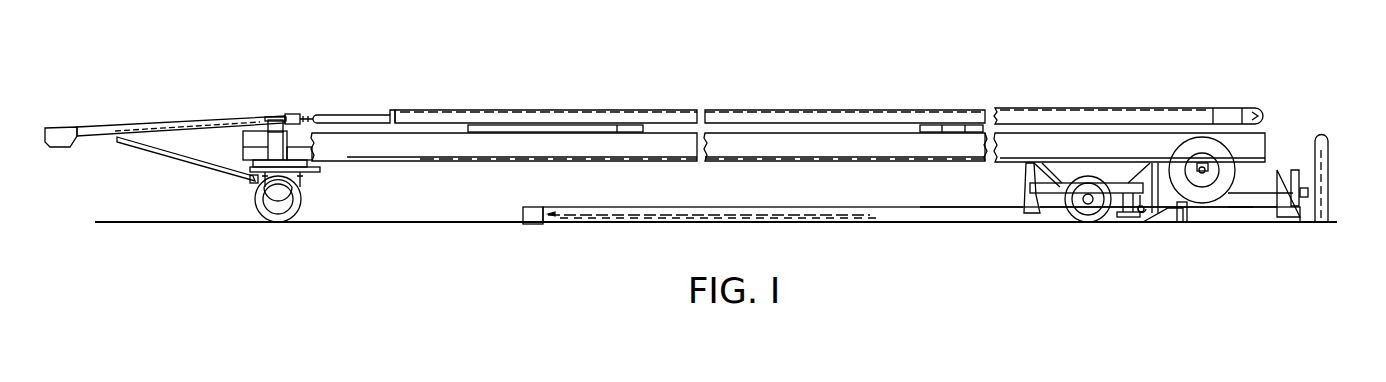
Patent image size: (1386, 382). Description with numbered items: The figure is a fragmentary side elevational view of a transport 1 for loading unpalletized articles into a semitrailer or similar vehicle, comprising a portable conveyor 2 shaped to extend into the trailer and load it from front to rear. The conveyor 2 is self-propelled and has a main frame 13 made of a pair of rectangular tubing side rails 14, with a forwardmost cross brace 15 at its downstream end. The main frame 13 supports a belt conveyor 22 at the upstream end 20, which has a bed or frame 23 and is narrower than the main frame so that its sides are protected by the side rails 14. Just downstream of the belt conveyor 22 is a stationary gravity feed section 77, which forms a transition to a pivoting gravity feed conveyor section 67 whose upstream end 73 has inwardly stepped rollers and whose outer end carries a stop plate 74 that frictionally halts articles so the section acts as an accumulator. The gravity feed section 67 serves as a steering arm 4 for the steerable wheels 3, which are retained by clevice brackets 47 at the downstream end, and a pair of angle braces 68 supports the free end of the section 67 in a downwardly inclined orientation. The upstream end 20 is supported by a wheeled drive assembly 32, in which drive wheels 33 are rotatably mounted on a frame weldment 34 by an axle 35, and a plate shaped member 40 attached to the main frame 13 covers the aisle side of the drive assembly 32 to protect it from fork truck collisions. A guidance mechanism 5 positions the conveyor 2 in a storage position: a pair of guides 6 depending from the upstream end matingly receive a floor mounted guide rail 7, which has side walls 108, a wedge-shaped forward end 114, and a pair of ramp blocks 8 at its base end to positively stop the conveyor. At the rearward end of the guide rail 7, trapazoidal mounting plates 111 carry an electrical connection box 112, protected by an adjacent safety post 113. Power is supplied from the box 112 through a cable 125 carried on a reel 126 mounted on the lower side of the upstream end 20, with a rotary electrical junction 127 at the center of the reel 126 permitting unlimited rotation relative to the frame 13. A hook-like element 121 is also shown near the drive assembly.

The transport 1 is at (797, 82).
The portable conveyor 2 is at (1228, 105).
The steerable wheels 3 is at (302, 205).
The steering arm 4 is at (140, 127).
The guidance mechanism 5 is at (902, 207).
The guides 6 is at (1123, 213).
The guide rail 7 is at (1007, 212).
The ramp blocks 8 is at (1167, 222).
The main frame 13 is at (630, 152).
The side rails 14 is at (332, 153).
The forwardmost cross brace 15 is at (247, 138).
The upstream end 20 is at (1263, 110).
The belt conveyor 22 is at (870, 110).
The bed or frame 23 is at (1012, 115).
The wheeled drive assembly 32 is at (1030, 218).
The drive wheels 33 is at (1068, 213).
The frame weldment 34 is at (1057, 187).
The axle 35 is at (1090, 208).
The plate shaped member 40 is at (1023, 178).
The clevice brackets 47 is at (270, 197).
The gravity feed conveyor section 67 is at (277, 119).
The angle braces 68 is at (153, 153).
The upstream end 73 is at (303, 116).
The stop plate 74 is at (63, 130).
The stationary gravity feed section 77 is at (380, 113).
The side walls 108 is at (658, 220).
The trapazoidal mounting plates 111 is at (1288, 192).
The electrical connection box 112 is at (1308, 193).
The safety post 113 is at (1330, 147).
The forward end 114 is at (537, 212).
The hook 121 is at (1140, 212).
The cable 125 is at (1257, 197).
The reel 126 is at (1183, 168).
The rotary electrical junction 127 is at (1203, 173).